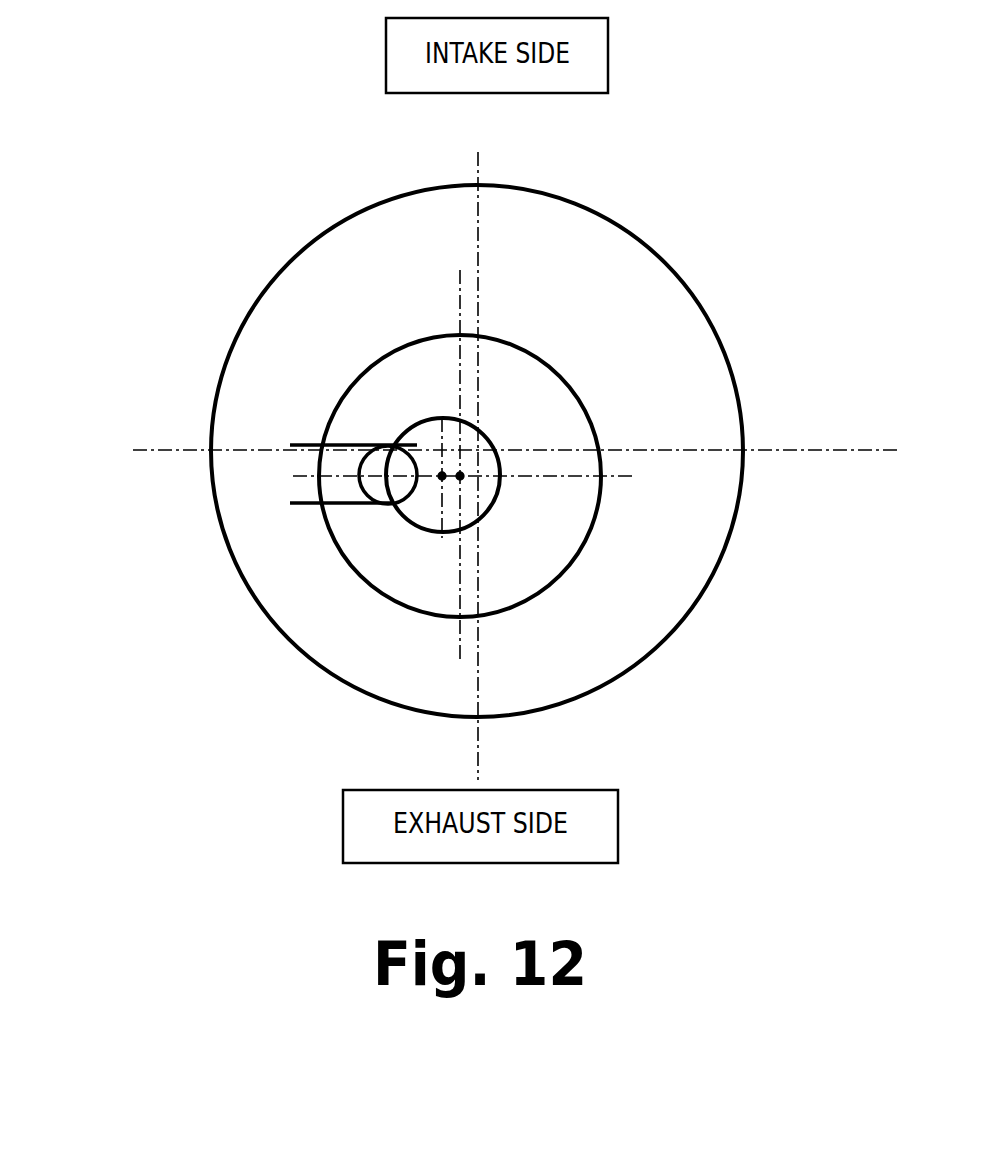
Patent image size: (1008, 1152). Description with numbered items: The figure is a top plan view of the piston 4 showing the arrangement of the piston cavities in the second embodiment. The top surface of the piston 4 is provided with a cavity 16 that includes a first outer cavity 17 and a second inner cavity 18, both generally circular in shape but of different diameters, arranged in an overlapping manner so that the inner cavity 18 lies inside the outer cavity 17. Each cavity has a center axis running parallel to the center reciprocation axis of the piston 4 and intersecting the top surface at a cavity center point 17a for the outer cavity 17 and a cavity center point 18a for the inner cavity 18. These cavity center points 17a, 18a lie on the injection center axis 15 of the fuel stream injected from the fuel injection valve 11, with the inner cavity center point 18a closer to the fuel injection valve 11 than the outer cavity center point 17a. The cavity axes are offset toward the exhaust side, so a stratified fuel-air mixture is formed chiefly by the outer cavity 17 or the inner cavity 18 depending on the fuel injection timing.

The piston 4 is at (723, 345).
The fuel injection valve 11 is at (360, 503).
The injection center axis 15 is at (543, 478).
The cavity 16 is at (321, 395).
The outer cavity 17 is at (387, 393).
The inner cavity 18 is at (417, 433).
The cavity center point 17a is at (460, 476).
The cavity center point 18a is at (442, 476).